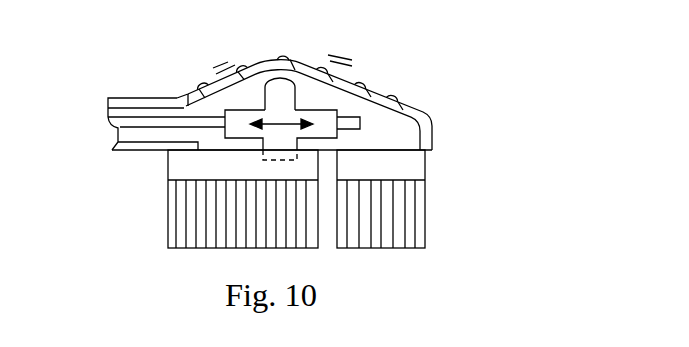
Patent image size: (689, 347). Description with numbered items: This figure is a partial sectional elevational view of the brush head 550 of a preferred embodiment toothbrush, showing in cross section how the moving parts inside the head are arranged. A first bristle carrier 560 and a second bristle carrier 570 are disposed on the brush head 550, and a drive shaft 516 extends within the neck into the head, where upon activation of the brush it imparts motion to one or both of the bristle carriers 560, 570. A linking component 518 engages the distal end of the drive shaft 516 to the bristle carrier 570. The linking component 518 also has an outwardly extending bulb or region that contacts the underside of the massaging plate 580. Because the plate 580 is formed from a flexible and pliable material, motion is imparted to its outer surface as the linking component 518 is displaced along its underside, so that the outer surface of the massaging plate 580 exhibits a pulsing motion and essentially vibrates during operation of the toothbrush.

The drive shaft 516 is at (120, 124).
The linking component 518 is at (273, 90).
The brush head 550 is at (398, 121).
The first bristle carrier 560 is at (412, 223).
The second bristle carrier 570 is at (187, 222).
The massaging plate 580 is at (348, 84).